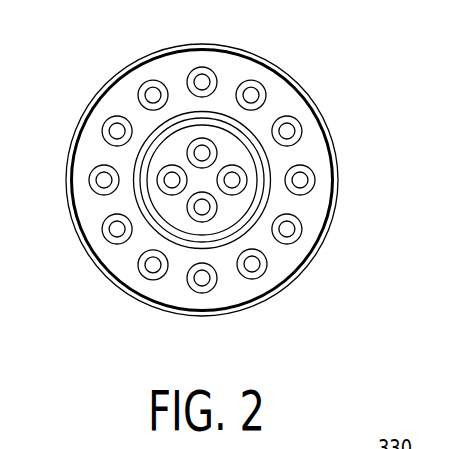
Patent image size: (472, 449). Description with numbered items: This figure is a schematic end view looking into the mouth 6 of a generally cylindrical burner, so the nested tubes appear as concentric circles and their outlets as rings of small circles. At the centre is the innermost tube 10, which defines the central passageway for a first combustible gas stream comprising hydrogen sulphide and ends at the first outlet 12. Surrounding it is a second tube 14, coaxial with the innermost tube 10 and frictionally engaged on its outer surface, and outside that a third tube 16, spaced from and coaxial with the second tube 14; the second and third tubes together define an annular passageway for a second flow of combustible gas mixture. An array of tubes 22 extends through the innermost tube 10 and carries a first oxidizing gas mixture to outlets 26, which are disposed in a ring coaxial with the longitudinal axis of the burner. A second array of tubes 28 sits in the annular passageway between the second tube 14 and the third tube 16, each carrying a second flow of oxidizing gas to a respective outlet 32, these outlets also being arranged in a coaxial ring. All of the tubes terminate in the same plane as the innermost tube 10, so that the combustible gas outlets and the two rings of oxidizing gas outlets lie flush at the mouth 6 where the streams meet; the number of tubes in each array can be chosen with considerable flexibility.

The mouth 6 is at (121, 259).
The innermost tube 10 is at (212, 238).
The first outlet 12 is at (170, 152).
The second tube 14 is at (273, 197).
The third tube 16 is at (187, 316).
The array of tubes 22 is at (232, 165).
The outlet 26 is at (236, 180).
The second array of tubes 28 is at (262, 278).
The outlet 32 is at (253, 263).